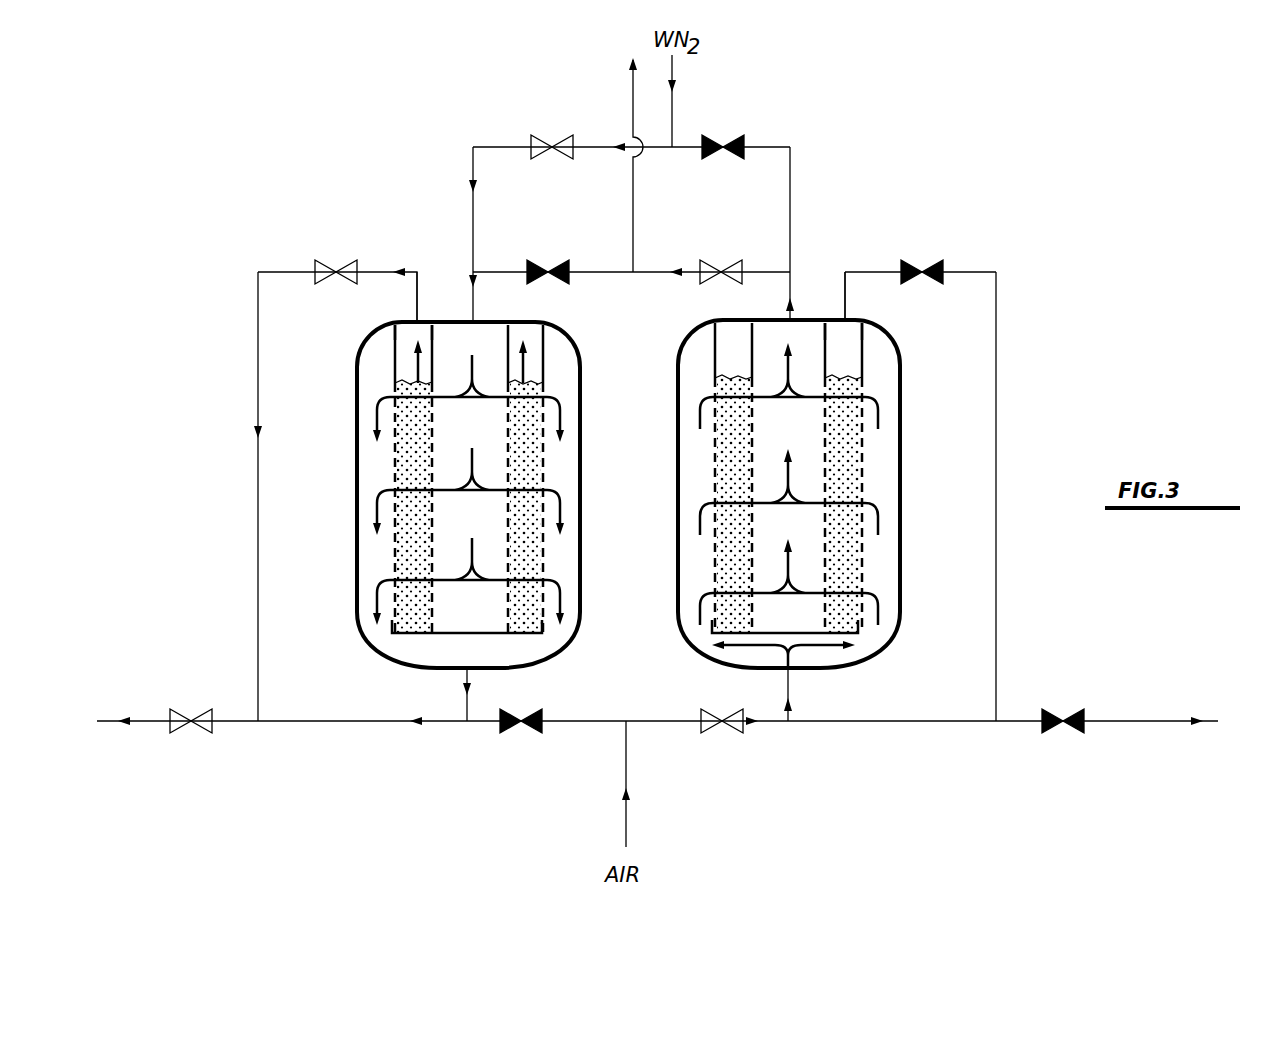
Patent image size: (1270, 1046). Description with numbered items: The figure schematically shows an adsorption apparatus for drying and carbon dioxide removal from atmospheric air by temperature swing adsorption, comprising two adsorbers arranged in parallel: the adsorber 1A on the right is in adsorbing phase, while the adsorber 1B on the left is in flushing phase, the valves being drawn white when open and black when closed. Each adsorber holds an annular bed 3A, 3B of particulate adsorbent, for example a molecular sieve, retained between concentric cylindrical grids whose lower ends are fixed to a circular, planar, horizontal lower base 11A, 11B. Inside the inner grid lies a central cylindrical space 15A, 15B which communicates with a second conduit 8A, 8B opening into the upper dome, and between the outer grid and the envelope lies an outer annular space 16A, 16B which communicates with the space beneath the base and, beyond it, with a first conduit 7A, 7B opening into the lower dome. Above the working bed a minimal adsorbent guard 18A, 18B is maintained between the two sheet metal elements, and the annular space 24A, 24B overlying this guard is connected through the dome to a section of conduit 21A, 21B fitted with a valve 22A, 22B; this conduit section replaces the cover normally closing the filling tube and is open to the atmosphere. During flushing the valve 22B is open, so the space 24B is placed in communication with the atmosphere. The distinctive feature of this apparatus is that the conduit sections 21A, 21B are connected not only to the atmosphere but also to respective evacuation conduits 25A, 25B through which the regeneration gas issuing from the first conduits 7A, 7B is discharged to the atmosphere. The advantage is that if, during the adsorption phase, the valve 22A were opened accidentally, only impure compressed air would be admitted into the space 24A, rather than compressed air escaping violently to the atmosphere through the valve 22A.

The adsorber 1A is at (912, 581).
The adsorber 1B is at (347, 488).
The annular bed 3A is at (840, 477).
The annular bed 3B is at (393, 455).
The first conduit 7A is at (788, 718).
The first conduit 7B is at (470, 717).
The second conduit 8A is at (790, 315).
The second conduit 8B is at (473, 313).
The lower base 11A is at (765, 635).
The lower base 11B is at (450, 640).
The central cylindrical space 15A is at (789, 484).
The central cylindrical space 15B is at (468, 482).
The outer annular space 16A is at (873, 562).
The outer annular space 16B is at (375, 563).
The adsorbent guard 18A is at (732, 388).
The adsorbent guard 18B is at (393, 392).
The section of conduit 21A is at (1000, 362).
The section of conduit 21B is at (258, 305).
The valve 22A is at (913, 262).
The valve 22B is at (320, 268).
The annular space 24A is at (850, 362).
The annular space 24B is at (403, 353).
The evacuation conduit 25A is at (1125, 723).
The evacuation conduit 25B is at (140, 722).